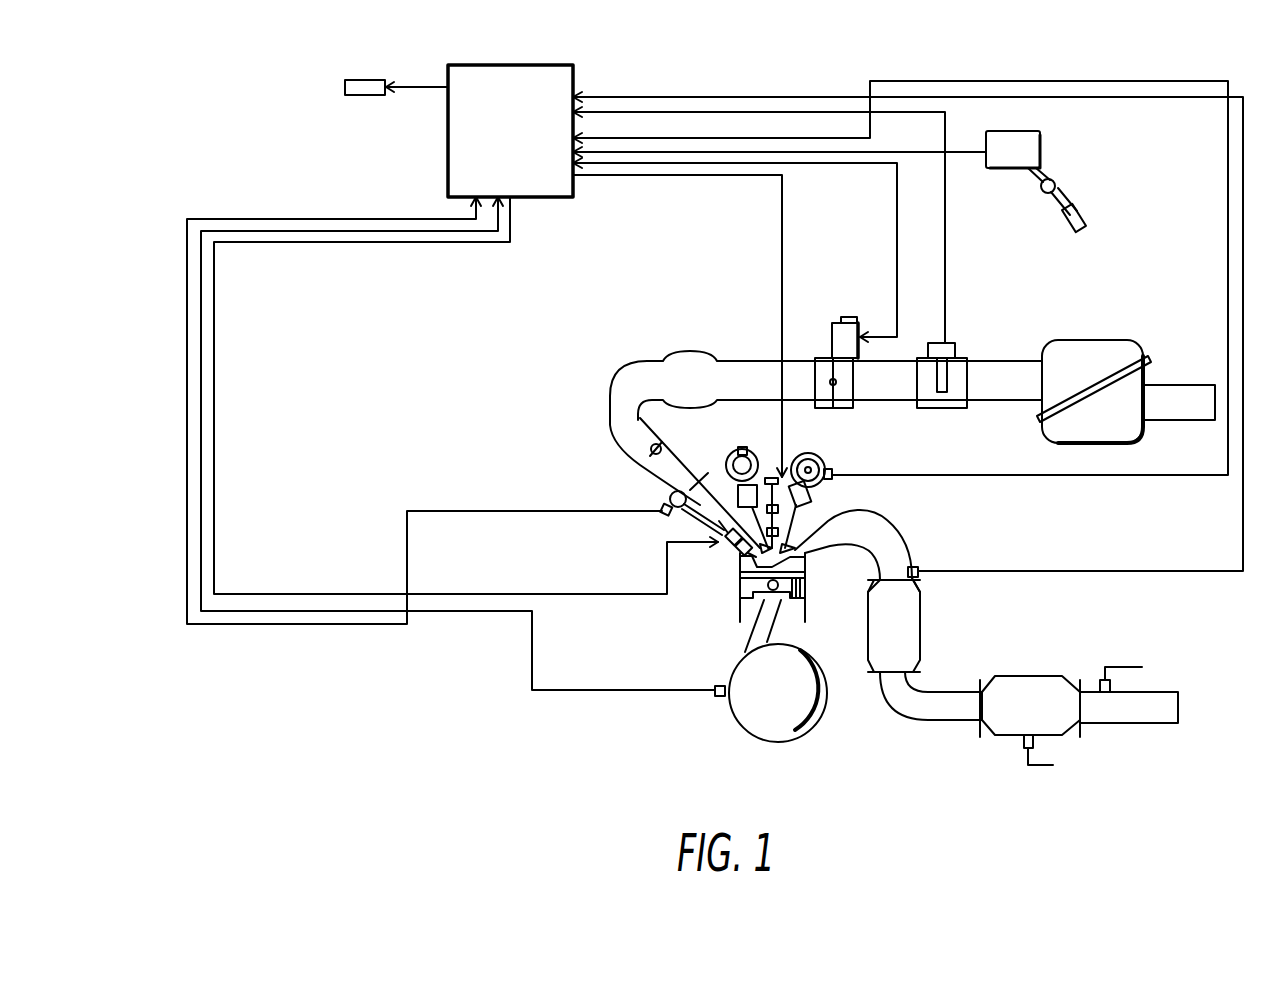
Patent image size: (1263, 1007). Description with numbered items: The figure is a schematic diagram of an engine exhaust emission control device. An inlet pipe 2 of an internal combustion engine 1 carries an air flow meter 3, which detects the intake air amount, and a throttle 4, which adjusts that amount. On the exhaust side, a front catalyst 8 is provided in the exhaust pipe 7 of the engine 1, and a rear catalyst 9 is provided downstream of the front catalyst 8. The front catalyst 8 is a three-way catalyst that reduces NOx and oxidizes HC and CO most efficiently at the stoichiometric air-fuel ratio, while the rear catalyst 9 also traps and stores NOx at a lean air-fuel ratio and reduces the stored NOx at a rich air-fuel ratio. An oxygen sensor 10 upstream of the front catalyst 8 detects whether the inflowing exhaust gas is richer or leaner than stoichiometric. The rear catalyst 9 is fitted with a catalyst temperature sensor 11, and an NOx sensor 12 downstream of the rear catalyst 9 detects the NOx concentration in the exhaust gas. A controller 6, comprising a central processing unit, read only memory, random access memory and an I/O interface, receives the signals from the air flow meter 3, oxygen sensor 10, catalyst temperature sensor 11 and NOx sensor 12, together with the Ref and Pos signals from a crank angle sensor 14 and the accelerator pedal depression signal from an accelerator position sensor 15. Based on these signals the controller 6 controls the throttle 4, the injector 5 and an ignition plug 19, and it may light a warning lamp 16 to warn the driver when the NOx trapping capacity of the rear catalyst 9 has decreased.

The internal combustion engine 1 is at (812, 622).
The inlet pipe 2 is at (748, 360).
The air flow meter 3 is at (950, 345).
The throttle 4 is at (830, 375).
The injector 5 is at (722, 553).
The controller 6 is at (520, 65).
The exhaust pipe 7 is at (890, 524).
The front catalyst 8 is at (916, 630).
The rear catalyst 9 is at (1038, 676).
The oxygen sensor 10 is at (920, 567).
The catalyst temperature sensor 11 is at (1020, 748).
The NOx sensor 12 is at (1100, 680).
The crank angle sensor 14 is at (723, 684).
The accelerator position sensor 15 is at (1008, 162).
The warning lamp 16 is at (365, 80).
The ignition plug 19 is at (768, 478).